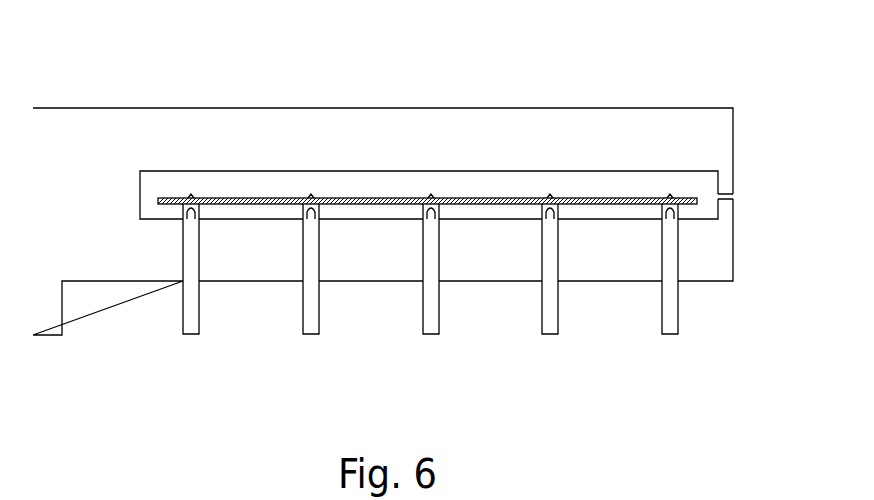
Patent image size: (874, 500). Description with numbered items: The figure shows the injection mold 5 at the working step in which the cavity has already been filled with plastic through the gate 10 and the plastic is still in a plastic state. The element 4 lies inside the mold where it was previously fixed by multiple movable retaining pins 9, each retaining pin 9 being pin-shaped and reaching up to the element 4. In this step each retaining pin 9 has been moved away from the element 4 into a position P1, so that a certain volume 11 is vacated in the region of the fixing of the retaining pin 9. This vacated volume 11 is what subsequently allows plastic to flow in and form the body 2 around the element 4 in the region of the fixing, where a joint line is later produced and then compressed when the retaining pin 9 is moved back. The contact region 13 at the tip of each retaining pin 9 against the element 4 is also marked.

The body 2 is at (488, 190).
The element 4 is at (405, 198).
The injection mold 5 is at (325, 120).
The retaining pin 9 is at (192, 325).
The gate 10 is at (722, 196).
The volume 11 is at (184, 207).
The contact bump 13 is at (188, 197).
The position P1 is at (181, 230).